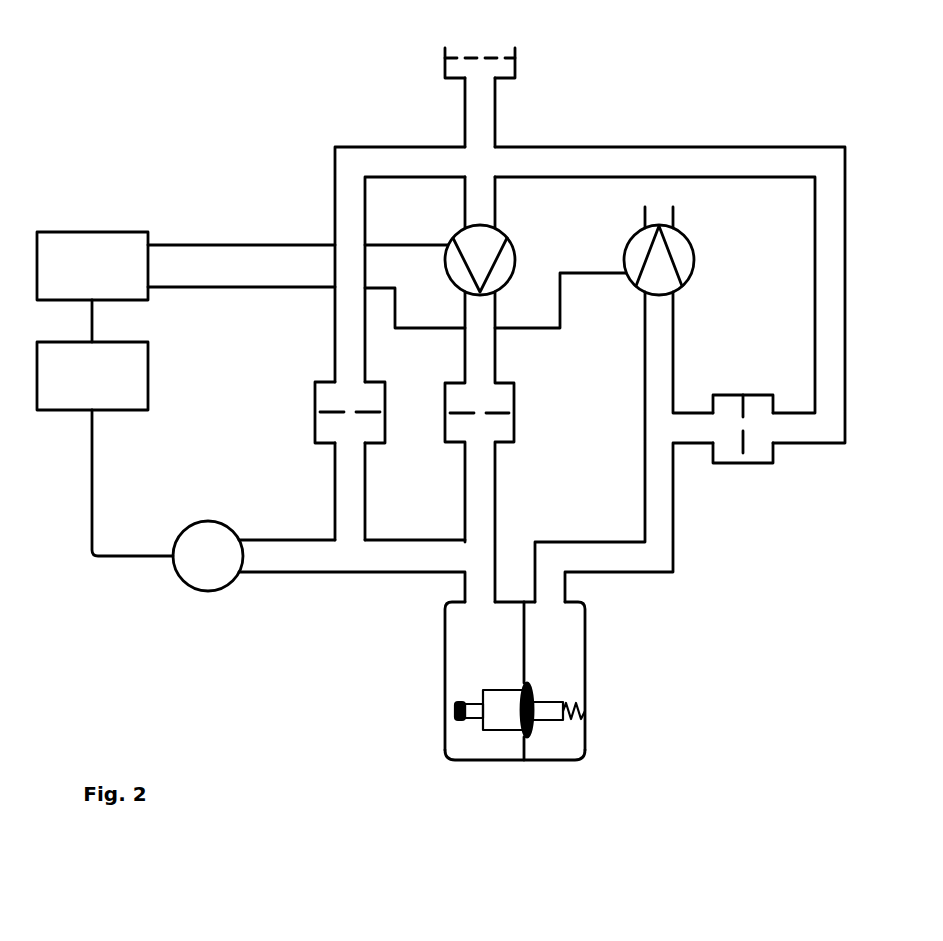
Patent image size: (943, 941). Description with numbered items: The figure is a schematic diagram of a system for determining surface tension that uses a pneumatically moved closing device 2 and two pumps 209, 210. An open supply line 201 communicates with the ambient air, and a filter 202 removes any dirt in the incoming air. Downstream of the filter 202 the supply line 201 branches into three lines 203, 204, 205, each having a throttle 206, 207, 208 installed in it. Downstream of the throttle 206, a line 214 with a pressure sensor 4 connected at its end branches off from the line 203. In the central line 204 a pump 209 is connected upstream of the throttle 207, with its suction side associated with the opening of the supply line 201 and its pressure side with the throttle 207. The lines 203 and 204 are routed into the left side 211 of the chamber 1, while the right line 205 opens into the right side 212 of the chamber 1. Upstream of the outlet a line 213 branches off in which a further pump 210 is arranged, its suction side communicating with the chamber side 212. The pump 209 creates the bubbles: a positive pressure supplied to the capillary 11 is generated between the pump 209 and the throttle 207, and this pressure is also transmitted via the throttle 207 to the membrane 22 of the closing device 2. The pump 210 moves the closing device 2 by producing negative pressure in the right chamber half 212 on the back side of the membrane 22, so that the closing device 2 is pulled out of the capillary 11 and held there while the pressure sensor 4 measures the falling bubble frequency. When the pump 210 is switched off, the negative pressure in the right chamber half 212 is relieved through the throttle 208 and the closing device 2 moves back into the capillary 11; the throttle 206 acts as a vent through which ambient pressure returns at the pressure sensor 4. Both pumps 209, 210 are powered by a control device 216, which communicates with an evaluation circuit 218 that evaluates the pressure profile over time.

The chamber 1 is at (463, 768).
The closing device 2 is at (532, 730).
The pressure sensor 4 is at (175, 592).
The capillary 11 is at (445, 708).
The membrane 22 is at (525, 640).
The supply line 201 is at (505, 118).
The filter 202 is at (480, 43).
The line 203 is at (325, 175).
The central line 204 is at (463, 205).
The right line 205 is at (705, 145).
The throttle 206 is at (370, 398).
The throttle 207 is at (495, 465).
The throttle 208 is at (754, 413).
The pump 209 is at (505, 259).
The further pump 210 is at (688, 251).
The left side of the chamber 211 is at (453, 660).
The right side of the chamber 212 is at (565, 660).
The line 213 is at (635, 363).
The line 214 is at (283, 530).
The control device 216 is at (98, 224).
The evaluation circuit 218 is at (65, 417).